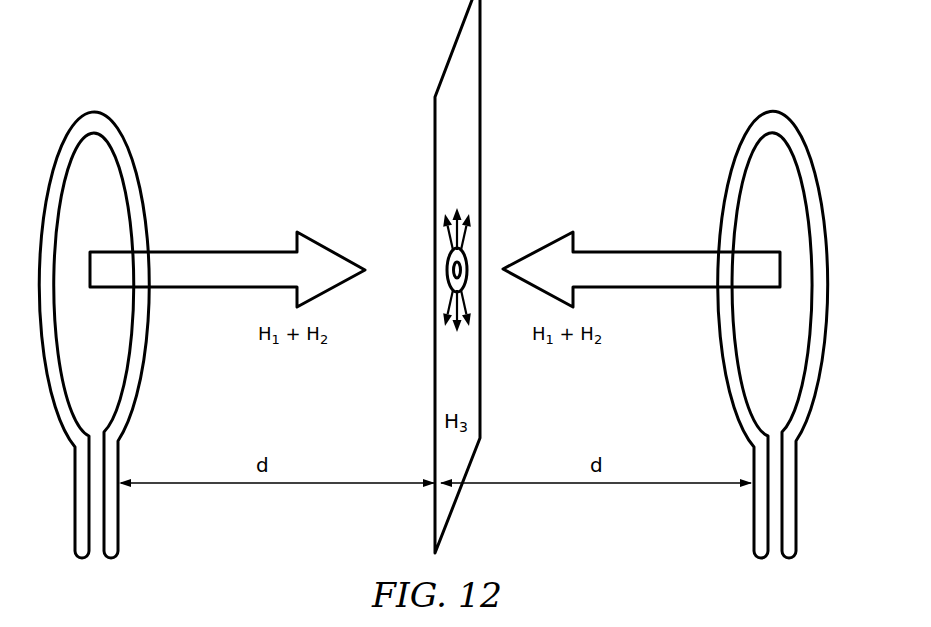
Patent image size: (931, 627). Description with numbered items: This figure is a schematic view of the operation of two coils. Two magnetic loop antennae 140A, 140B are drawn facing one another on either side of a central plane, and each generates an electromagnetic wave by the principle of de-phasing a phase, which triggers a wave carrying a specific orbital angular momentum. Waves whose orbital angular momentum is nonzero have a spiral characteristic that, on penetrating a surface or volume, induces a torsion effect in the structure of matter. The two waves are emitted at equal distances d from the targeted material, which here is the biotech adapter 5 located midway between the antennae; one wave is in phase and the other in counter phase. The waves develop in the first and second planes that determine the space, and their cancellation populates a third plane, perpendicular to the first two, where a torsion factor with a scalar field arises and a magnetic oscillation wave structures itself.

The magnetic loop antenna 140A is at (131, 94).
The magnetic loop antenna 140B is at (739, 94).
The biotech adapter 5 is at (467, 256).